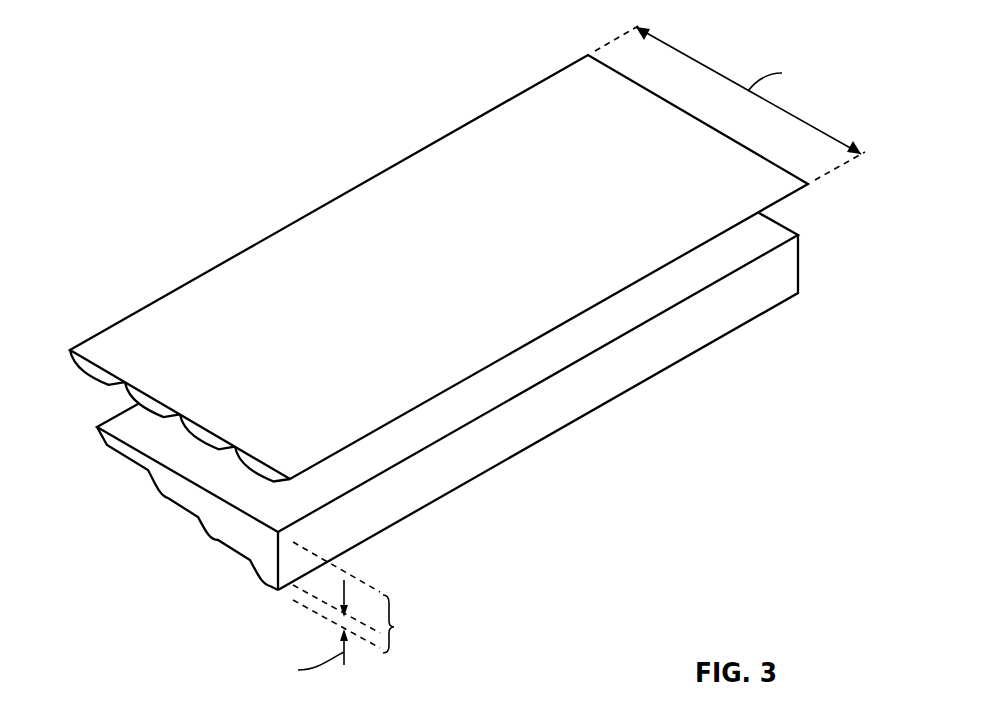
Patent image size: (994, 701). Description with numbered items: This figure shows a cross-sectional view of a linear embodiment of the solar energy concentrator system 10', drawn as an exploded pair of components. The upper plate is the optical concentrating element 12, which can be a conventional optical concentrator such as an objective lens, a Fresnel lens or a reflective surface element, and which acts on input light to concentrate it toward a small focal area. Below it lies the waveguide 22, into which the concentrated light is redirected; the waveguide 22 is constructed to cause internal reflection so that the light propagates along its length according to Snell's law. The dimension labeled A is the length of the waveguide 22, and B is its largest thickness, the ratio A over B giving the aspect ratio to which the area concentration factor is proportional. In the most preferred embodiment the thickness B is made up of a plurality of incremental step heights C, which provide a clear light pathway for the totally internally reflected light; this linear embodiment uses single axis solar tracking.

The concentrator system 10' is at (461, 355).
The optical concentrating element 12 is at (155, 301).
The waveguide 22 is at (135, 472).